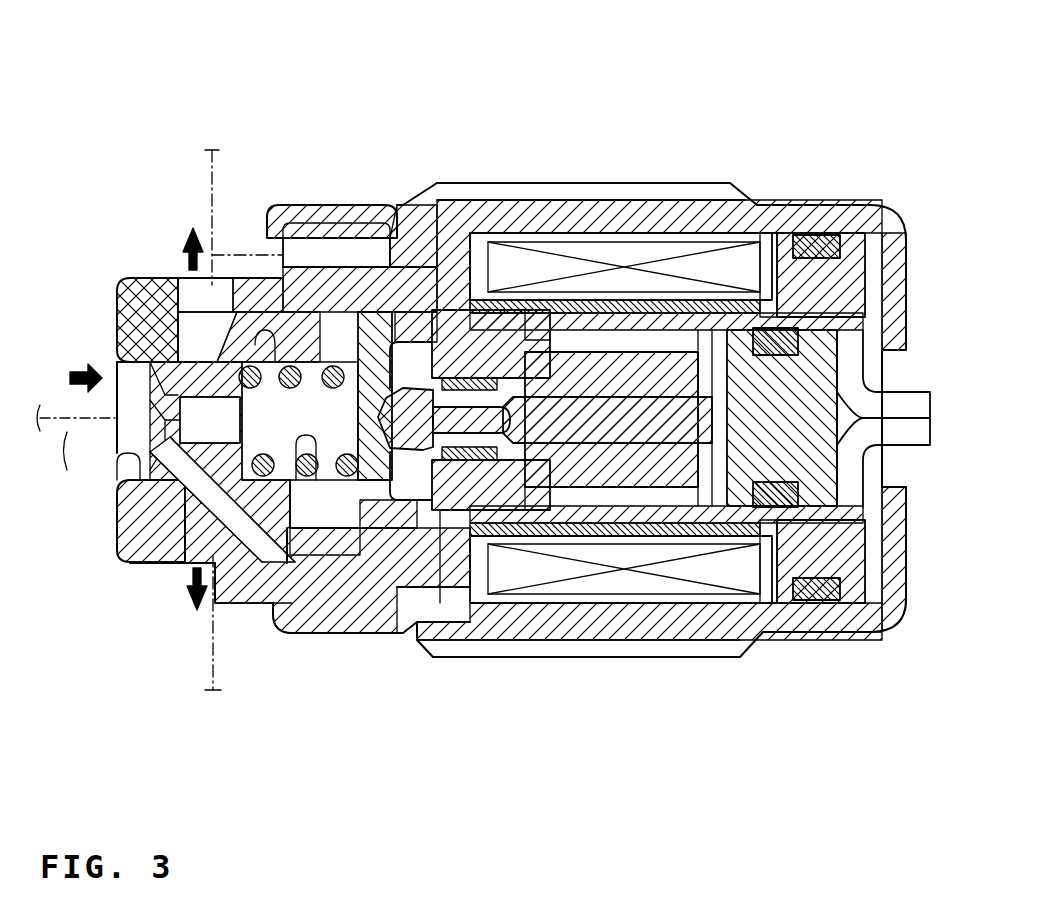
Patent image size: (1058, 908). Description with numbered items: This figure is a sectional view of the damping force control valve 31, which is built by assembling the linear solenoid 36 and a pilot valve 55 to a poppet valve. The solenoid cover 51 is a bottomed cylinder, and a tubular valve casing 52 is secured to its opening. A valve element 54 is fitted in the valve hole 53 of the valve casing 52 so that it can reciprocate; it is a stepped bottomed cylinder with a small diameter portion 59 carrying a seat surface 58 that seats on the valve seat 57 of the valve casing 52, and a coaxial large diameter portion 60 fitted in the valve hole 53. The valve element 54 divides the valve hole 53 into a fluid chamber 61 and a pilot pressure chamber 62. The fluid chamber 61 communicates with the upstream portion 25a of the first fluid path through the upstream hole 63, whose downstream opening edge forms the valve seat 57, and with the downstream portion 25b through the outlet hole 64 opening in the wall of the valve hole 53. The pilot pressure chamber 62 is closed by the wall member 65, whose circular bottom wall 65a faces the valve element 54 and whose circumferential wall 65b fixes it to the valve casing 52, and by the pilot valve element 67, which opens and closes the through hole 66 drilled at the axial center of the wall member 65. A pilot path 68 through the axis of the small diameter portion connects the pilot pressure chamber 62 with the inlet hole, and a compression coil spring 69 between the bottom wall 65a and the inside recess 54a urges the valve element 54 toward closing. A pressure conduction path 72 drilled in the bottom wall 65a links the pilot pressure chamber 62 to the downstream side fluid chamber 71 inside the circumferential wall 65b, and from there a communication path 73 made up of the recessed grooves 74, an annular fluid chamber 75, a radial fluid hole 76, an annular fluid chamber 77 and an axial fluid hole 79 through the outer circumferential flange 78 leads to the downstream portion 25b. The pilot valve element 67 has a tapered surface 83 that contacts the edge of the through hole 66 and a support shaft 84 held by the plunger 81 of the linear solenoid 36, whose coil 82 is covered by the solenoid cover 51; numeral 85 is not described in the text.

The upstream portion of the first fluid path 25a is at (76, 456).
The downstream portion of the first fluid path 25b is at (212, 190).
The damping force control valve 31 is at (683, 172).
The linear solenoid 36 is at (540, 598).
The solenoid cover 51 is at (815, 208).
The valve casing 52 is at (128, 292).
The valve hole 53 is at (338, 225).
The valve element 54 is at (163, 281).
The inside recess 54a is at (295, 553).
The pilot valve 55 is at (378, 633).
The valve seat 57 is at (185, 520).
The seat surface 58 is at (150, 358).
The small diameter portion 59 is at (158, 470).
The large diameter portion 60 is at (295, 615).
The fluid chamber 61 is at (186, 343).
The pilot pressure chamber 62 is at (286, 436).
The upstream hole 63 is at (112, 470).
The outlet hole 64 is at (188, 280).
The pilot pressure chamber defining wall member 65 is at (380, 235).
The bottom wall 65a is at (370, 225).
The circumferential wall 65b is at (468, 300).
The through hole 66 is at (330, 633).
The pilot valve element 67 is at (406, 238).
The pilot path 68 is at (247, 400).
The compression coil spring 69 is at (248, 443).
The downstream side fluid chamber 71 is at (440, 560).
The pressure conduction path 72 is at (355, 633).
The communication path 73 is at (500, 310).
The recessed grooves 74 is at (458, 238).
The annular fluid chamber 75 is at (420, 603).
The fluid hole 76 is at (434, 300).
The annular fluid chamber 77 is at (452, 300).
The outer circumferential flange 78 is at (313, 223).
The fluid hole 79 is at (297, 206).
The plunger 81 is at (640, 585).
The coil 82 is at (760, 260).
The tapered surface 83 is at (358, 403).
The support shaft 84 is at (500, 525).
The armature 85 is at (605, 540).